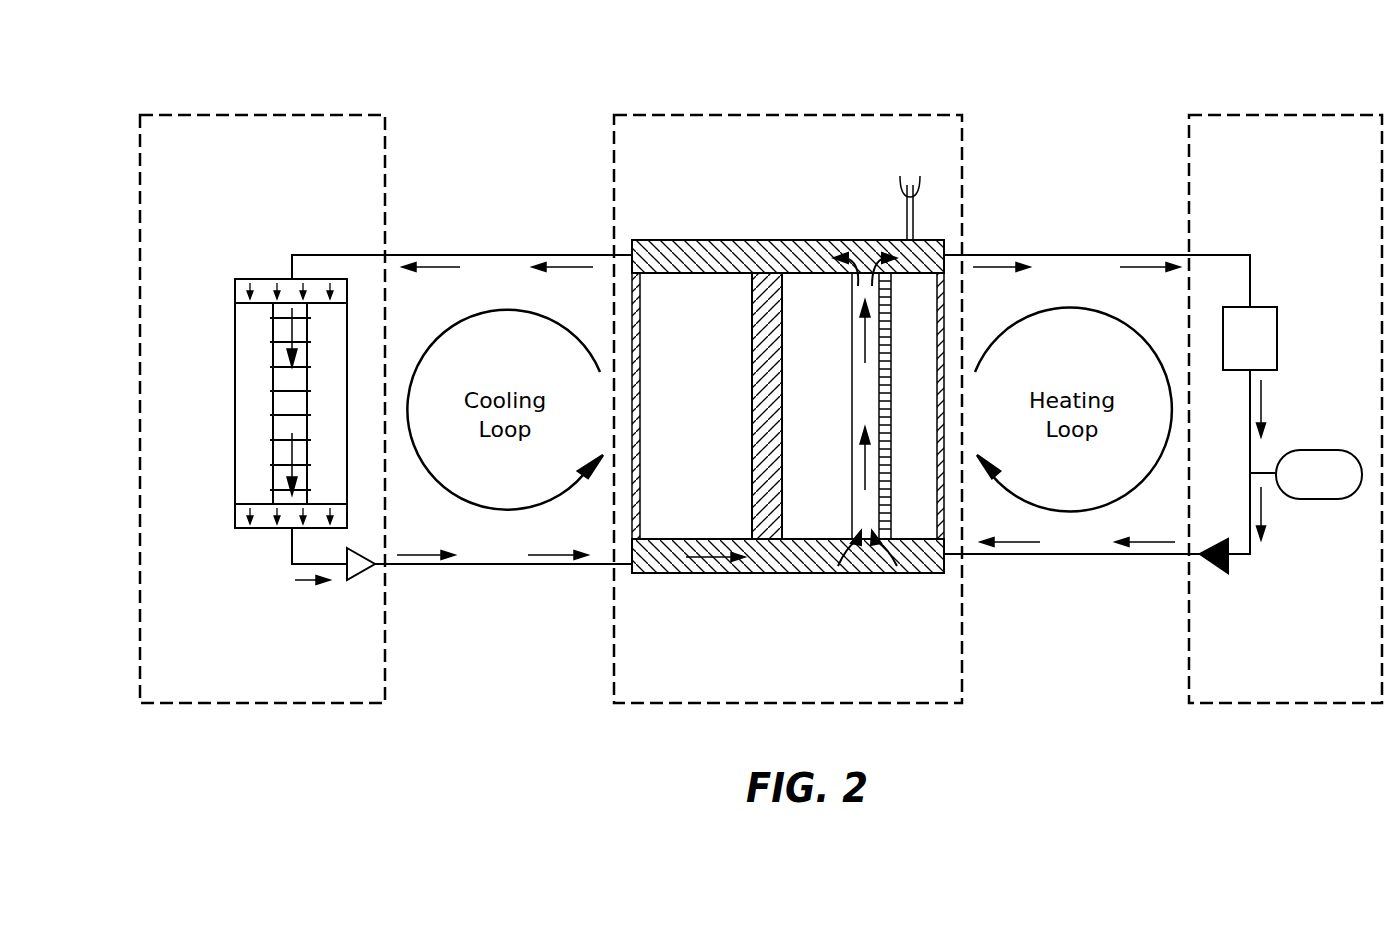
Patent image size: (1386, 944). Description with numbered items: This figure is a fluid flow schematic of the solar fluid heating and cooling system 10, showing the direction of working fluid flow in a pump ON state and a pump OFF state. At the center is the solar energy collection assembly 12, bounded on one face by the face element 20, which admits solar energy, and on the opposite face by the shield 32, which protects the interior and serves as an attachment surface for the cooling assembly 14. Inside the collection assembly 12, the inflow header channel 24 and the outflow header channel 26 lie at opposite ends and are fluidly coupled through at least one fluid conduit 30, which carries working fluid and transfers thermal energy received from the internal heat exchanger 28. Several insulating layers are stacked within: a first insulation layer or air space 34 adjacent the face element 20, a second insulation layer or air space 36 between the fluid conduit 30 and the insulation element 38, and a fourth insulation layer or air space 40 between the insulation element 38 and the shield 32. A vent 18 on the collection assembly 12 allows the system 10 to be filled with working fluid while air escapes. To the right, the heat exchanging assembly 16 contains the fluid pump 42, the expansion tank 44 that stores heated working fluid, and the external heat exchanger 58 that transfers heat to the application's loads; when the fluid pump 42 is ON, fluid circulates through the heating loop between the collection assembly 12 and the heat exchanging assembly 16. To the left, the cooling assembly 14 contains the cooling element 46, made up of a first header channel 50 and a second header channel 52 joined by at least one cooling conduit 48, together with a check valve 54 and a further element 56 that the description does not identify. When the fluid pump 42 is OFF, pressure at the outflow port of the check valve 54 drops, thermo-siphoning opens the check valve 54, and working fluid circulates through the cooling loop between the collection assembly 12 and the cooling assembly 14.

The system 10 is at (1065, 80).
The solar energy collection assembly 12 is at (626, 158).
The cooling assembly 14 is at (209, 160).
The heat exchanging assembly 16 is at (1329, 163).
The vent 18 is at (902, 180).
The face element 20 is at (937, 363).
The inflow header channel 24 is at (668, 570).
The outflow header channel 26 is at (683, 248).
The internal heat exchanger 28 is at (878, 376).
The fluid conduit 30 is at (852, 406).
The shield 32 is at (641, 318).
The first insulation layer or air space 34 is at (897, 501).
The second insulation layer or air space 36 is at (794, 498).
The insulation element 38 is at (757, 399).
The fourth insulation layer or air space 40 is at (679, 491).
The fluid pump 42 is at (1213, 570).
The expansion tank 44 is at (1304, 487).
The cooling element 46 is at (251, 357).
The cooling conduit 48 is at (275, 428).
The first header channel 50 is at (240, 293).
The second header channel 52 is at (240, 516).
The check valve 54 is at (357, 575).
The flow direction 56 is at (292, 342).
The external heat exchanger 58 is at (1234, 351).